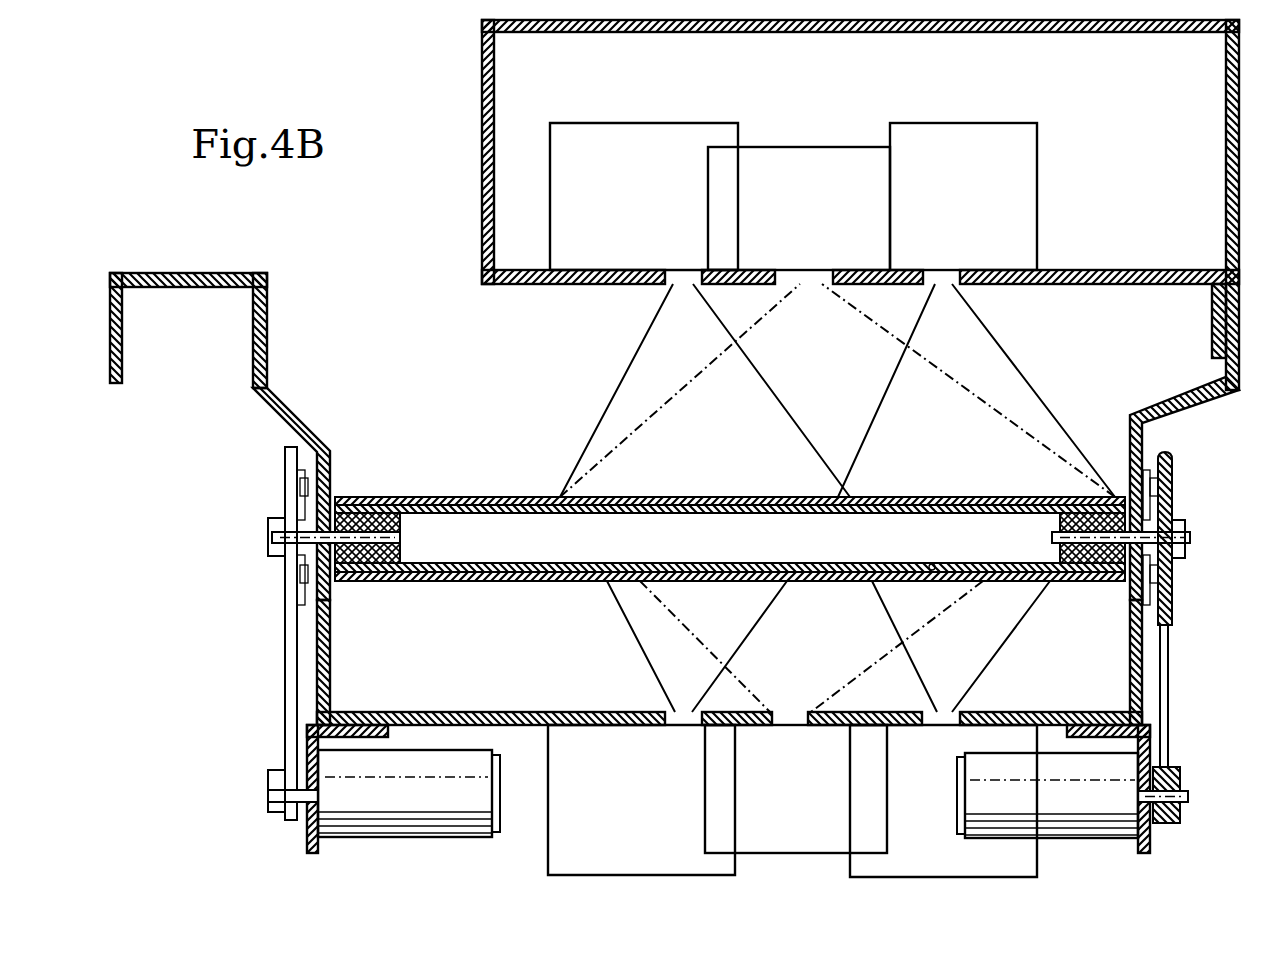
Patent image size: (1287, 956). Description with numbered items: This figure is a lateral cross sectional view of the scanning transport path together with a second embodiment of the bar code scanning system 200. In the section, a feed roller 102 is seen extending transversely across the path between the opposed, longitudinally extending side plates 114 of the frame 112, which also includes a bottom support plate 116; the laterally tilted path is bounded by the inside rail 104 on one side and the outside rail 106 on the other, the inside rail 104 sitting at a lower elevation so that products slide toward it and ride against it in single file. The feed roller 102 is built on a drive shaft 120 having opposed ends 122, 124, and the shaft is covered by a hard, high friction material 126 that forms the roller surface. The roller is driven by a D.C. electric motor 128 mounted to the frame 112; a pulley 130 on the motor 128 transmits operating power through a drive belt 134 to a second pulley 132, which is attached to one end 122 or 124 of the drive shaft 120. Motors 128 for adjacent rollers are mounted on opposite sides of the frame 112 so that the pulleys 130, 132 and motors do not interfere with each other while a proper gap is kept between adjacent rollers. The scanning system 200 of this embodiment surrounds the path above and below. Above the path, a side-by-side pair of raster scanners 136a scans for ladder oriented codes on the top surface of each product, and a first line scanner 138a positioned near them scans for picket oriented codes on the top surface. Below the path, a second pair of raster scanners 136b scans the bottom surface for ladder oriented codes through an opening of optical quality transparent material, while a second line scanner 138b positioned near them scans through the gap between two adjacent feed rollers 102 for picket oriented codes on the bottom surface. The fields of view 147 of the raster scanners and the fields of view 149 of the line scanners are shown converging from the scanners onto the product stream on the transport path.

The bar code scanning system 200 is at (482, 132).
The feed roller 102 is at (445, 482).
The inside rail 104 is at (1127, 432).
The outside rail 106 is at (330, 460).
The frame 112 is at (528, 756).
The side plate 114 is at (330, 650).
The bottom support plate 116 is at (537, 712).
The drive shaft 120 is at (483, 497).
The first end of drive shaft 122 is at (290, 500).
The second end of drive shaft 124 is at (1172, 508).
The high friction material 126 is at (962, 497).
The electric motor 128 is at (982, 790).
The pulley 130 is at (290, 822).
The second pulley 132 is at (1173, 585).
The drive belt 134 is at (1168, 670).
The top raster scanner 136a is at (612, 130).
The bottom raster scanner 136b is at (792, 801).
The top line scanner 138a is at (803, 158).
The bottom line scanner 138b is at (796, 789).
The field of view of raster scanner 147 is at (622, 378).
The field of view of line scanner 149 is at (877, 330).